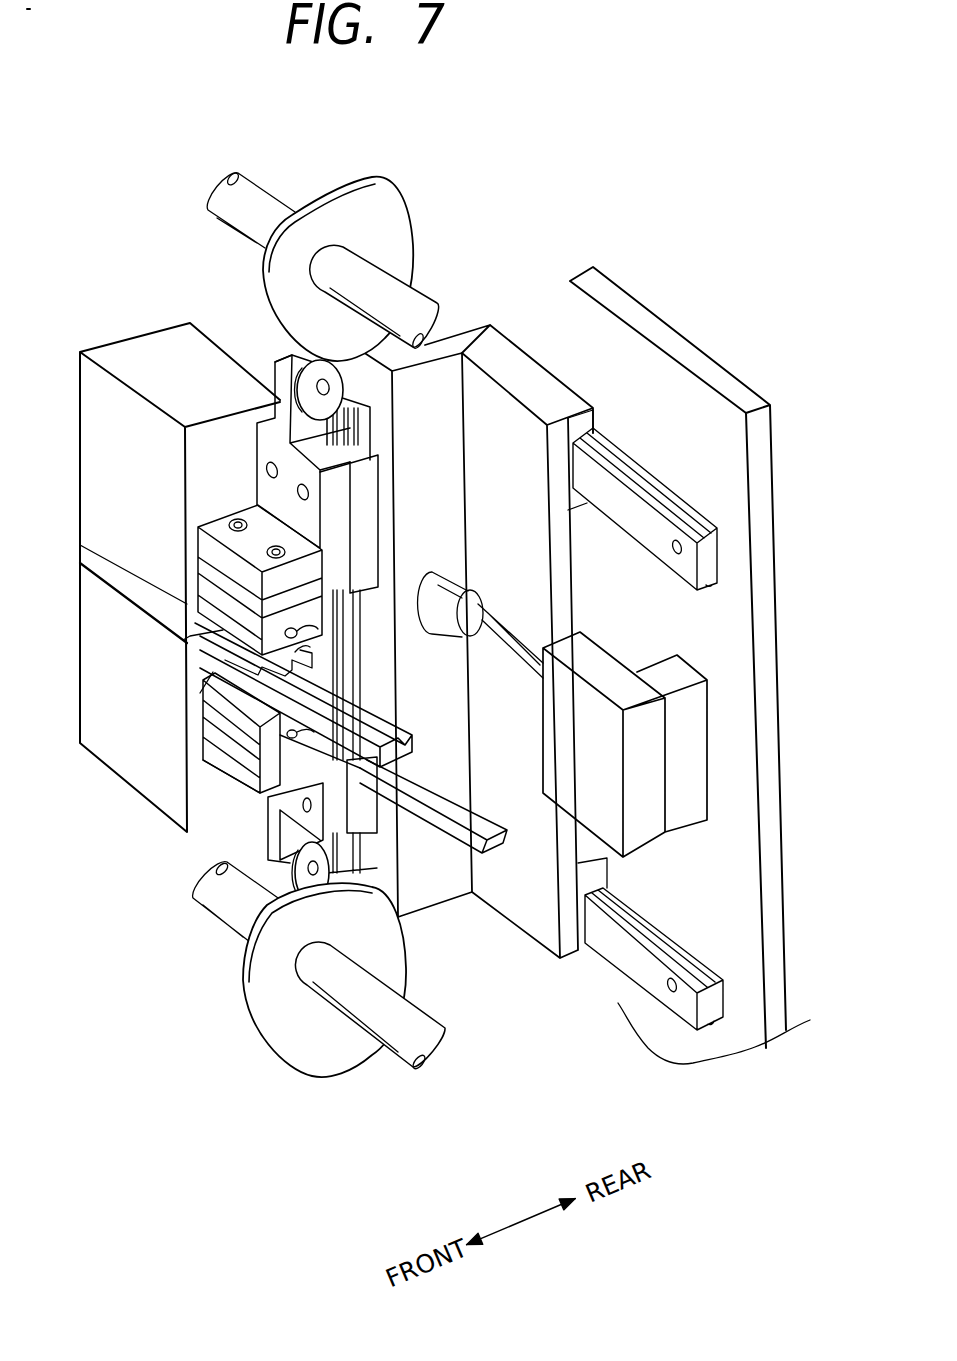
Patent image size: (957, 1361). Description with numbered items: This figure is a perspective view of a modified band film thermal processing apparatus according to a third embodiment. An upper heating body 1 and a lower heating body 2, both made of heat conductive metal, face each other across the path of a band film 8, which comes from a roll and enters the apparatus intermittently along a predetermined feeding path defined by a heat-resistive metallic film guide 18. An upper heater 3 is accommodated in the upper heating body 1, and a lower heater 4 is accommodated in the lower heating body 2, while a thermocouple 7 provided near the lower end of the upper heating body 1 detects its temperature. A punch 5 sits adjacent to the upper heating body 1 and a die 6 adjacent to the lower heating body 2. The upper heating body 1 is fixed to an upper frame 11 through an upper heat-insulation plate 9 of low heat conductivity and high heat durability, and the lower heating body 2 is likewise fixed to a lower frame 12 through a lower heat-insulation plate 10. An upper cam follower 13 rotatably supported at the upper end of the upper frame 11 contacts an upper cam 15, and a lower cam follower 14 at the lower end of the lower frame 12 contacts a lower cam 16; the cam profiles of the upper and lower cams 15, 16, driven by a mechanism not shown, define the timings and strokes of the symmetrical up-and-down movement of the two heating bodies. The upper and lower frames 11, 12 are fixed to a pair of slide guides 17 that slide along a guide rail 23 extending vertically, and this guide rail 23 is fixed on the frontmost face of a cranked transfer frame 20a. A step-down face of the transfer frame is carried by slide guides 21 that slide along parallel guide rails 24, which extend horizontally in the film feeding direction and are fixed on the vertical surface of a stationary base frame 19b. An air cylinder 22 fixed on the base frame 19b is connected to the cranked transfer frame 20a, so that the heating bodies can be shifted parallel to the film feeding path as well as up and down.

The upper heating body 1 is at (190, 587).
The lower heating body 2 is at (200, 693).
The upper heater 3 is at (190, 610).
The lower heater 4 is at (340, 733).
The punch 5 is at (160, 345).
The die 6 is at (147, 783).
The thermocouple 7 is at (207, 652).
The band film 8 is at (487, 835).
The upper heat-insulation plate 9 is at (205, 563).
The lower heat-insulation plate 10 is at (200, 717).
The upper frame 11 is at (258, 505).
The lower frame 12 is at (200, 733).
The upper cam follower 13 is at (300, 355).
The lower cam follower 14 is at (313, 870).
The upper cam 15 is at (360, 205).
The lower cam 16 is at (293, 1040).
The slide guides 17 is at (372, 520).
The film guide 18 is at (323, 783).
The stationary base frame 19b is at (658, 325).
The cranked transfer frame 20a is at (480, 353).
The slide guides 21 is at (538, 370).
The air cylinder 22 is at (650, 830).
The guide rail 23 is at (367, 667).
The parallel guide rails 24 is at (695, 505).